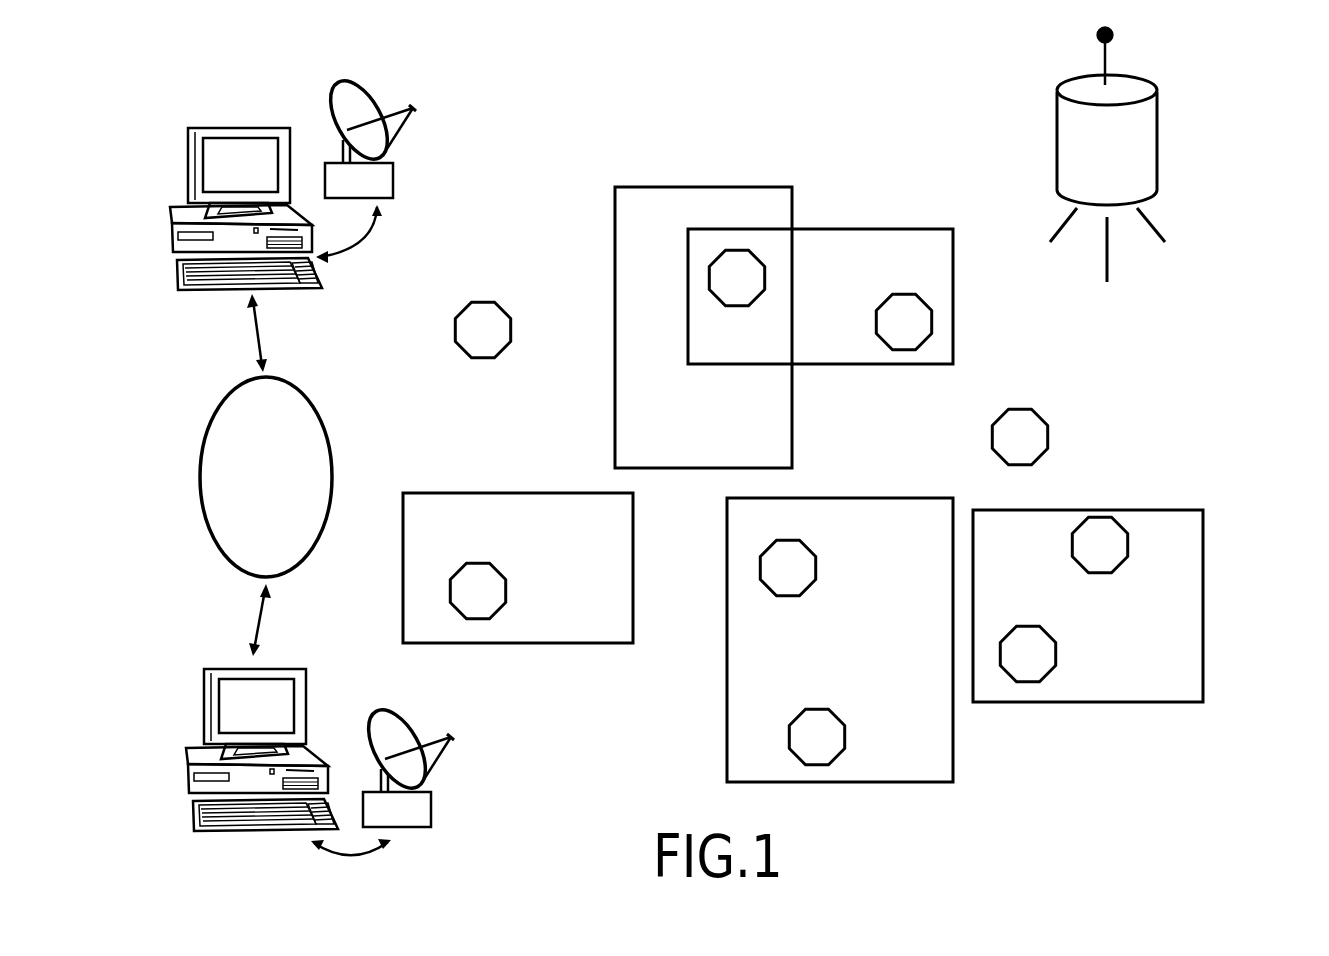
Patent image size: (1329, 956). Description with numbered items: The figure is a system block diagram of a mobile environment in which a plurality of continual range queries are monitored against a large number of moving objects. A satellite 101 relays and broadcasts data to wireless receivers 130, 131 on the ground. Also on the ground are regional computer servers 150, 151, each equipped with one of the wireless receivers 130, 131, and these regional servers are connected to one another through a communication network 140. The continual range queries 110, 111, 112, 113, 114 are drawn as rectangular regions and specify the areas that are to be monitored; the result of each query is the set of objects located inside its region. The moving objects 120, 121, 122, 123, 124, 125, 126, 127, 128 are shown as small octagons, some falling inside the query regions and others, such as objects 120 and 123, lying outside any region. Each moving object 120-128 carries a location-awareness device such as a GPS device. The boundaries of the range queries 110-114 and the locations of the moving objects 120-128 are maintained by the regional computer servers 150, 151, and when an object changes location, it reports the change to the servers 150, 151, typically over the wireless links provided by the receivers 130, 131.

The satellite 101 is at (1197, 113).
The continual range query 110 is at (707, 187).
The continual range query 111 is at (898, 228).
The continual range query 112 is at (1175, 510).
The continual range query 113 is at (855, 498).
The continual range query 114 is at (497, 493).
The moving object 120 is at (502, 312).
The moving object 121 is at (733, 307).
The moving object 122 is at (932, 323).
The moving object 123 is at (1042, 420).
The moving object 124 is at (817, 567).
The moving object 125 is at (840, 717).
The moving object 126 is at (1057, 658).
The moving object 127 is at (507, 590).
The moving object 128 is at (1123, 562).
The wireless receiver 130 is at (394, 92).
The wireless receiver 131 is at (434, 724).
The communication network 140 is at (320, 416).
The regional computer server 150 is at (217, 112).
The regional computer server 151 is at (213, 658).